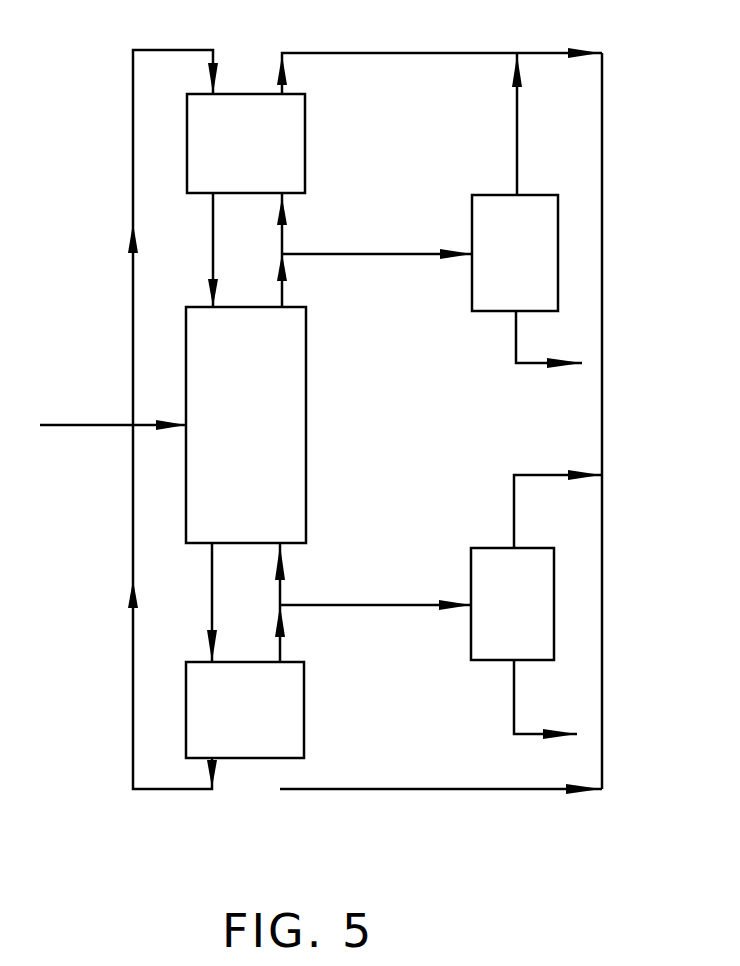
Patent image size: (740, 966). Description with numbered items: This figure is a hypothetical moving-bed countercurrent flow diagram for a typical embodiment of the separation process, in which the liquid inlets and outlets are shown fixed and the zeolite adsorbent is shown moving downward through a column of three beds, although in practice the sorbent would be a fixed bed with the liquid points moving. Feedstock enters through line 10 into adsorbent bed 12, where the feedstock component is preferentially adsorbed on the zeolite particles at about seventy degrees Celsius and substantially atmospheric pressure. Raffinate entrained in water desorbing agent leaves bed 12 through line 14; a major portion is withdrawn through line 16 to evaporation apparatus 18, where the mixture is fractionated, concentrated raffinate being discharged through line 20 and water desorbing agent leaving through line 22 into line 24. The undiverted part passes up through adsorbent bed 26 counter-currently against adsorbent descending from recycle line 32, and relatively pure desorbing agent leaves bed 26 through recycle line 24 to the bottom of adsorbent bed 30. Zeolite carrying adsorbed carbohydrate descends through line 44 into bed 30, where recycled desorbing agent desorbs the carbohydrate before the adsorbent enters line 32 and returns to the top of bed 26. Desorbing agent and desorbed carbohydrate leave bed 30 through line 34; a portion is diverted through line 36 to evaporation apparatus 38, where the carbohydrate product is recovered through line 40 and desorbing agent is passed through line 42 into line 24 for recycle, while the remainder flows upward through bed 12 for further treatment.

The line 10 is at (66, 428).
The adsorbent bed 12 is at (186, 324).
The line 14 is at (282, 290).
The line 16 is at (330, 252).
The evaporation apparatus 18 is at (472, 208).
The line 20 is at (530, 365).
The line 22 is at (517, 128).
The line 24 is at (545, 52).
The adsorbent bed 26 is at (305, 132).
The adsorbent bed 30 is at (304, 733).
The line 32 is at (160, 790).
The line 34 is at (282, 648).
The line 36 is at (322, 603).
The evaporation apparatus 38 is at (554, 562).
The line 40 is at (514, 700).
The line 42 is at (552, 472).
The line 44 is at (212, 604).